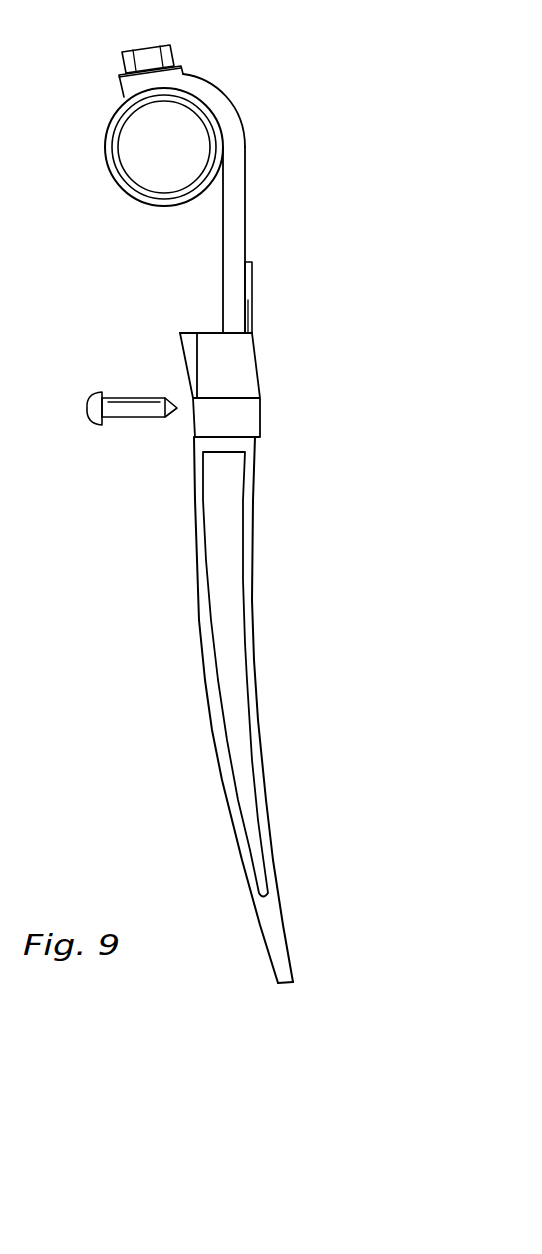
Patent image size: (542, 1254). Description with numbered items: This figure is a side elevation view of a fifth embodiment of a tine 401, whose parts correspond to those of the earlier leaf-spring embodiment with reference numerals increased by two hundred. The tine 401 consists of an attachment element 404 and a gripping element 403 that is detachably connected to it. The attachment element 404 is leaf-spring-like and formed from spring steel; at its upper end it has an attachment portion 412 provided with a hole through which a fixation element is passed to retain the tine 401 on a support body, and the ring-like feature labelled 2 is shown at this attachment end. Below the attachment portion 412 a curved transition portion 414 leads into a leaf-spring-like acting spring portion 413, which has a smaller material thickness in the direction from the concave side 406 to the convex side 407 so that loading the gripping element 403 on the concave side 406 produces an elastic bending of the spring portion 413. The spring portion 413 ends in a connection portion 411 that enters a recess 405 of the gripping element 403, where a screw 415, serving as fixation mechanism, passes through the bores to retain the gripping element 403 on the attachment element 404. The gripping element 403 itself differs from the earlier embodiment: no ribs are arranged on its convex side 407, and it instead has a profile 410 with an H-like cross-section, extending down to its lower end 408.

The ring 2 is at (125, 170).
The tine 401 is at (474, 380).
The gripping element 403 is at (248, 750).
The attachment element 404 is at (238, 230).
The recess 405 is at (250, 367).
The concave side 406 is at (260, 737).
The convex side 407 is at (213, 720).
The tip 408 is at (285, 985).
The profile 410 is at (252, 543).
The connection portion 411 is at (230, 328).
The attachment portion 412 is at (182, 77).
The spring portion 413 is at (233, 242).
The transition portion 414 is at (235, 112).
The screw 415 is at (95, 425).